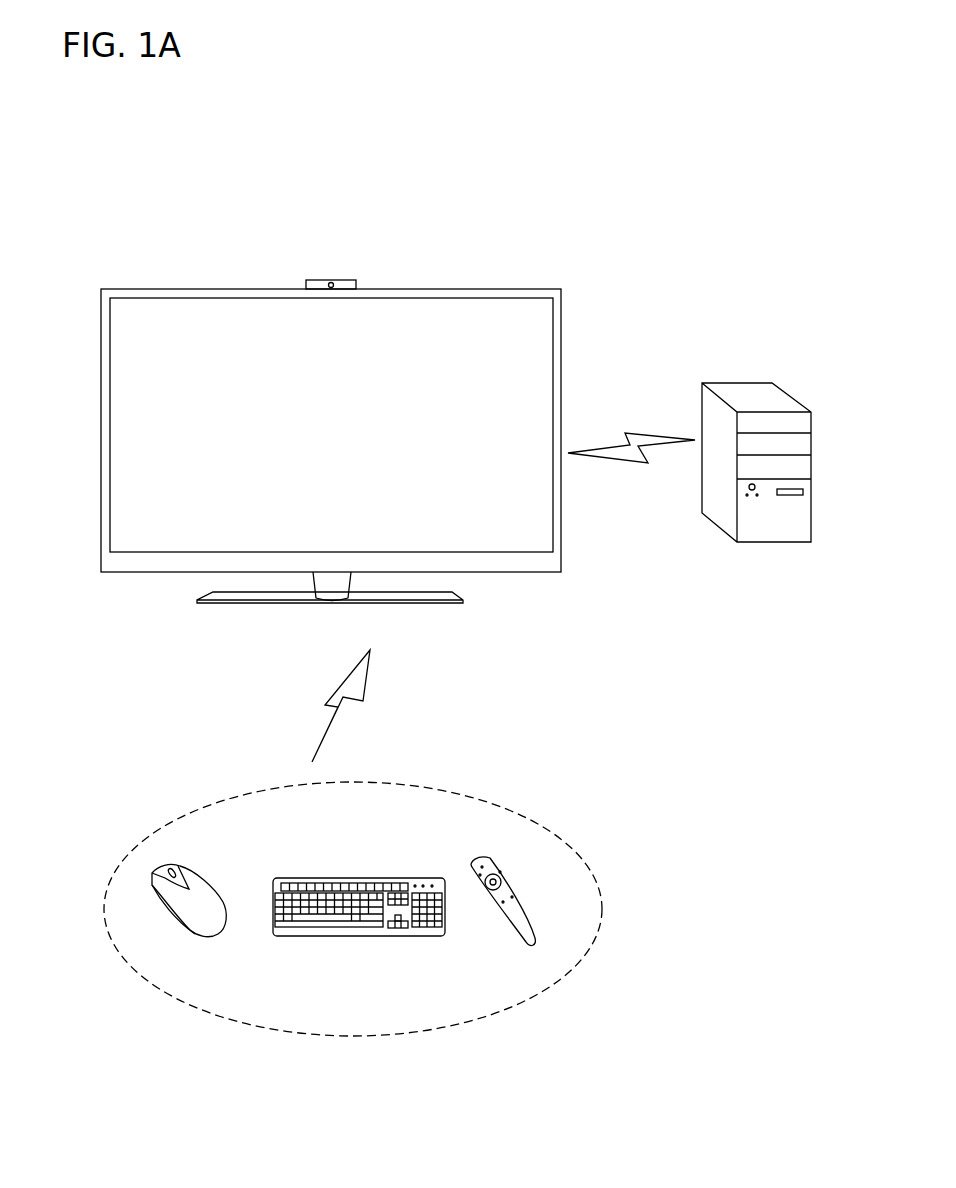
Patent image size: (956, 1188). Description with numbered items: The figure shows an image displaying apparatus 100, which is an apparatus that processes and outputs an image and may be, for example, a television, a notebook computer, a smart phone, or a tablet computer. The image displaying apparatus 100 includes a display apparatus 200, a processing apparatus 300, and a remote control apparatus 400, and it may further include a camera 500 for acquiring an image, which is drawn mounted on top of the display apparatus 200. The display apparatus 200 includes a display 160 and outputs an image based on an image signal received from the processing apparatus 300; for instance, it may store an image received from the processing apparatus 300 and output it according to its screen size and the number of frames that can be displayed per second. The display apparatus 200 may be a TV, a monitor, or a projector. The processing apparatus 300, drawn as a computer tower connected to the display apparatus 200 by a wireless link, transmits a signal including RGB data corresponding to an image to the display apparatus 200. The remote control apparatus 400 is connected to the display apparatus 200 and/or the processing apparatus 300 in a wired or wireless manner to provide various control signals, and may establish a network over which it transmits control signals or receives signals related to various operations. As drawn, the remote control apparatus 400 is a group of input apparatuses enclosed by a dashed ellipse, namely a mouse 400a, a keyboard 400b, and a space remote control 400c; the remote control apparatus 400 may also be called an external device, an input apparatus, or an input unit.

The image displaying apparatus 100 is at (143, 163).
The display apparatus 200 is at (368, 418).
The display 160 is at (530, 320).
The camera 500 is at (343, 283).
The processing apparatus 300 is at (759, 383).
The remote control apparatus 400 is at (548, 827).
The mouse 400a is at (203, 917).
The keyboard 400b is at (355, 932).
The space remote control 400c is at (508, 927).